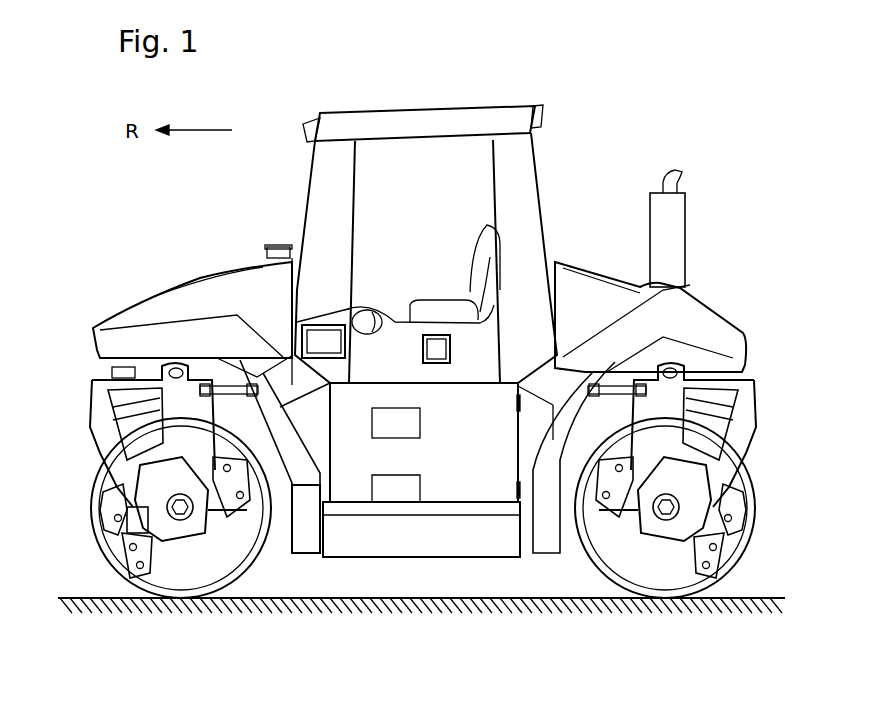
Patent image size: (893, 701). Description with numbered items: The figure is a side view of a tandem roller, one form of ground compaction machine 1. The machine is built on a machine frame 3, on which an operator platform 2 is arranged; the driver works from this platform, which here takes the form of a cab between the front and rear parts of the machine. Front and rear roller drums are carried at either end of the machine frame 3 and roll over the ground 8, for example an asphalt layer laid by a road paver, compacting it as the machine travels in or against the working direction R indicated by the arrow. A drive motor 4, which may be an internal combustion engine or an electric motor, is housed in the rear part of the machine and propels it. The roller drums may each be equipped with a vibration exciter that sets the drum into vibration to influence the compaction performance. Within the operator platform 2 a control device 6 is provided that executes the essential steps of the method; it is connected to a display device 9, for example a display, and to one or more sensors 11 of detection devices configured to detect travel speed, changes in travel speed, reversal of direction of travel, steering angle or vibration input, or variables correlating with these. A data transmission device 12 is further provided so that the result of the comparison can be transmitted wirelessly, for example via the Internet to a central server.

The ground compaction machine 1 is at (597, 156).
The operator platform 2 is at (437, 197).
The machine frame 3 is at (235, 300).
The drive motor 4 is at (625, 337).
The control device 6 is at (323, 345).
The ground 8 is at (318, 605).
The display device 9 is at (322, 298).
The sensor 11 is at (130, 525).
The data transmission device 12 is at (443, 343).